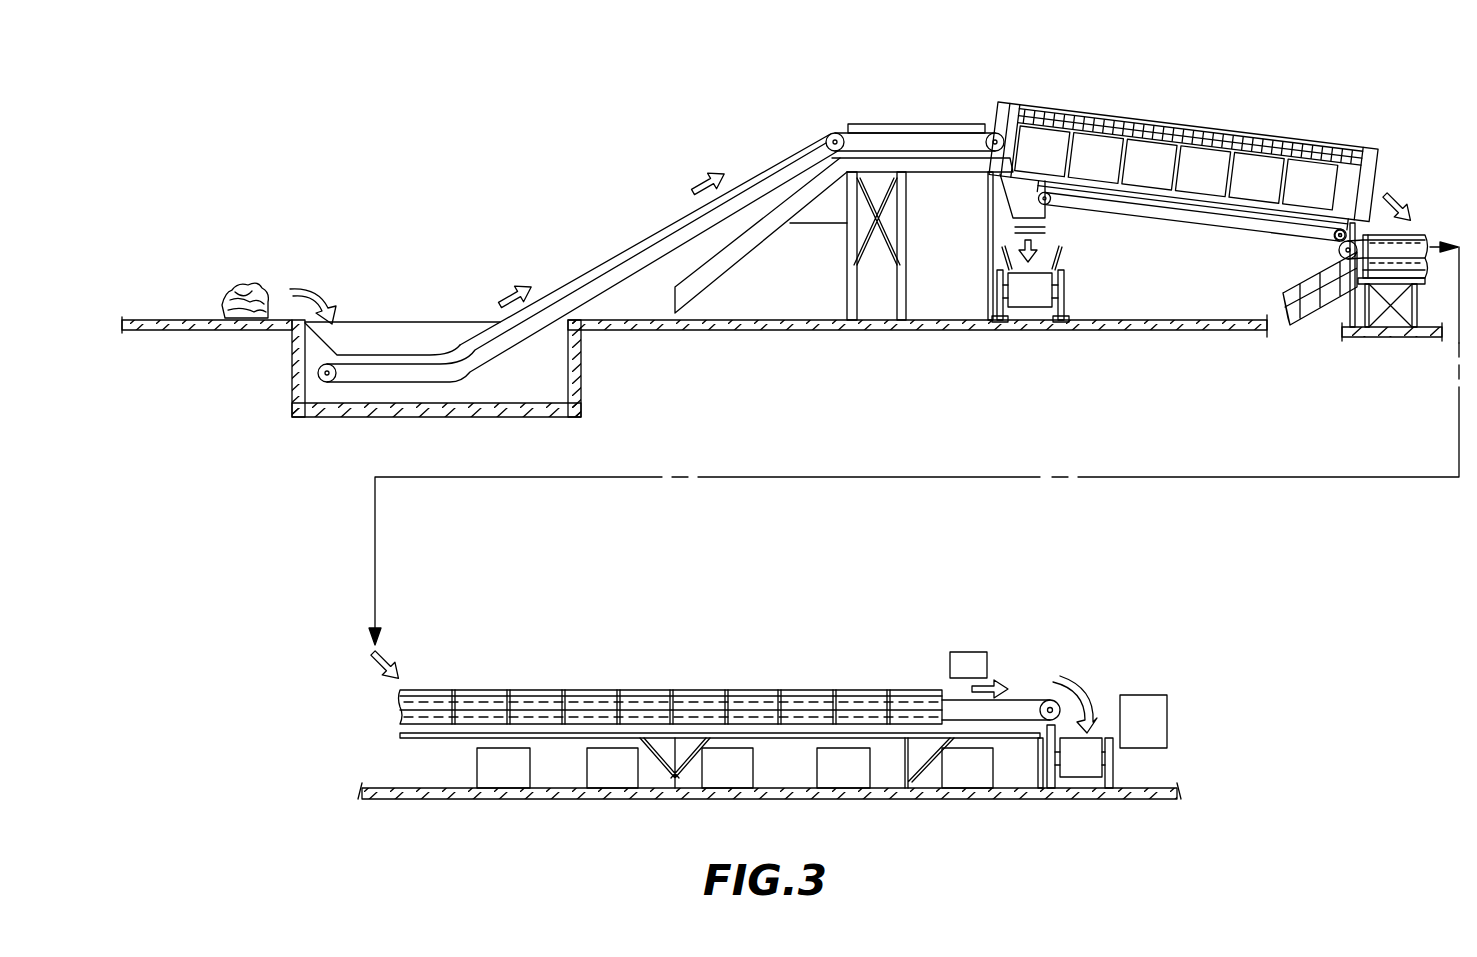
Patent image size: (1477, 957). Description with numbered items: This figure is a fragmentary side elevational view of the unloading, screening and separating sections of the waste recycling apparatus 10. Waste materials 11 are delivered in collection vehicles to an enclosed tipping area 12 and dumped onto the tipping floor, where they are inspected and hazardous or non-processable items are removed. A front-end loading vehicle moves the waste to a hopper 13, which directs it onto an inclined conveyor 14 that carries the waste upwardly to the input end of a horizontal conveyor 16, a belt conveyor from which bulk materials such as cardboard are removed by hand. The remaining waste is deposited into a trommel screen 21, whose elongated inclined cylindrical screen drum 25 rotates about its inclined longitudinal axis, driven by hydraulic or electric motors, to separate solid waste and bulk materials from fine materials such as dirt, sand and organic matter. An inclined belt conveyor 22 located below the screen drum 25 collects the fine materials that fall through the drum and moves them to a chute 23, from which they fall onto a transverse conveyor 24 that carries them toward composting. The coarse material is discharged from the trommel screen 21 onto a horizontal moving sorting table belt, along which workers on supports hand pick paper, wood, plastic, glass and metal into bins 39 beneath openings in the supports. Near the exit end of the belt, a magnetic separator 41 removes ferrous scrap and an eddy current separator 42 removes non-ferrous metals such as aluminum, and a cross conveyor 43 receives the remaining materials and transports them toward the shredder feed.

The waste recycling apparatus 10 is at (1312, 102).
The waste materials 11 is at (247, 290).
The tipping area 12 is at (172, 320).
The hopper 13 is at (403, 340).
The inclined conveyor 14 is at (640, 248).
The horizontal conveyor 16 is at (920, 133).
The trommel screen 21 is at (1181, 172).
The inclined belt conveyor 22 is at (1188, 239).
The chute 23 is at (1048, 210).
The conveyor 24 is at (1040, 298).
The screen drum 25 is at (1194, 108).
The bin 39 is at (605, 778).
The magnetic separator 41 is at (965, 650).
The eddy current separator 42 is at (1138, 693).
The cross conveyor 43 is at (1083, 778).